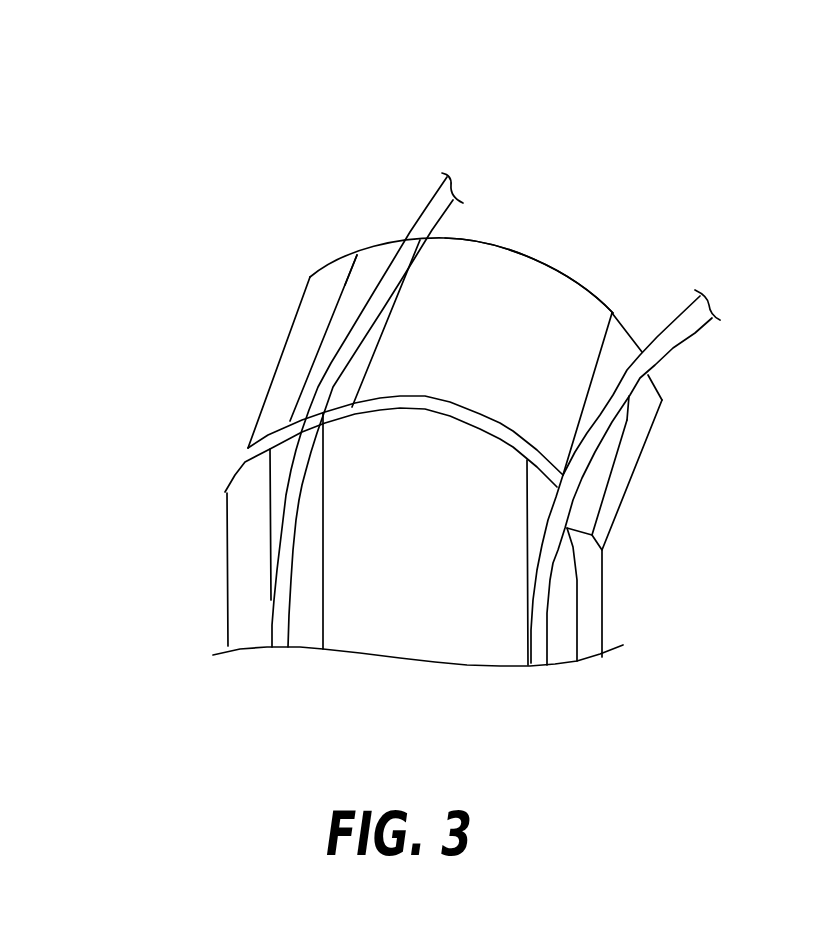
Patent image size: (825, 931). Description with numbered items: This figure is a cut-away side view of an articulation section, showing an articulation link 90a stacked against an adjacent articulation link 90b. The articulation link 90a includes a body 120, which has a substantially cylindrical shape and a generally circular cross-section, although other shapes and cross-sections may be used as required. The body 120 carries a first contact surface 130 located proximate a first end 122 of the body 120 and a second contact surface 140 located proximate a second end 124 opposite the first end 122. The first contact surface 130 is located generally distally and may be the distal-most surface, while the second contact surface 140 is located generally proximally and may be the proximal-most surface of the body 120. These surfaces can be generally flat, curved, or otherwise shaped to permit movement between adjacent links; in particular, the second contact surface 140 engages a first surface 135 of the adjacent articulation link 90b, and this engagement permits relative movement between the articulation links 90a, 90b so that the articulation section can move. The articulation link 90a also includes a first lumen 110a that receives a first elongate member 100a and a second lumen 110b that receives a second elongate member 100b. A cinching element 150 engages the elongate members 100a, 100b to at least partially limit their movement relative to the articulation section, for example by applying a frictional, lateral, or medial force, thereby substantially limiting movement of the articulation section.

The articulation link 90a is at (267, 333).
The adjacent articulation link 90b is at (207, 548).
The first elongate member 100a is at (723, 300).
The second elongate member 100b is at (465, 180).
The first lumen 110a is at (619, 345).
The second lumen 110b is at (361, 281).
The body 120 is at (505, 349).
The first end 122 is at (504, 235).
The second end 124 is at (623, 553).
The first contact surface 130 is at (564, 250).
The first surface 135 is at (372, 433).
The second contact surface 140 is at (448, 413).
The cinching element 150 is at (644, 393).